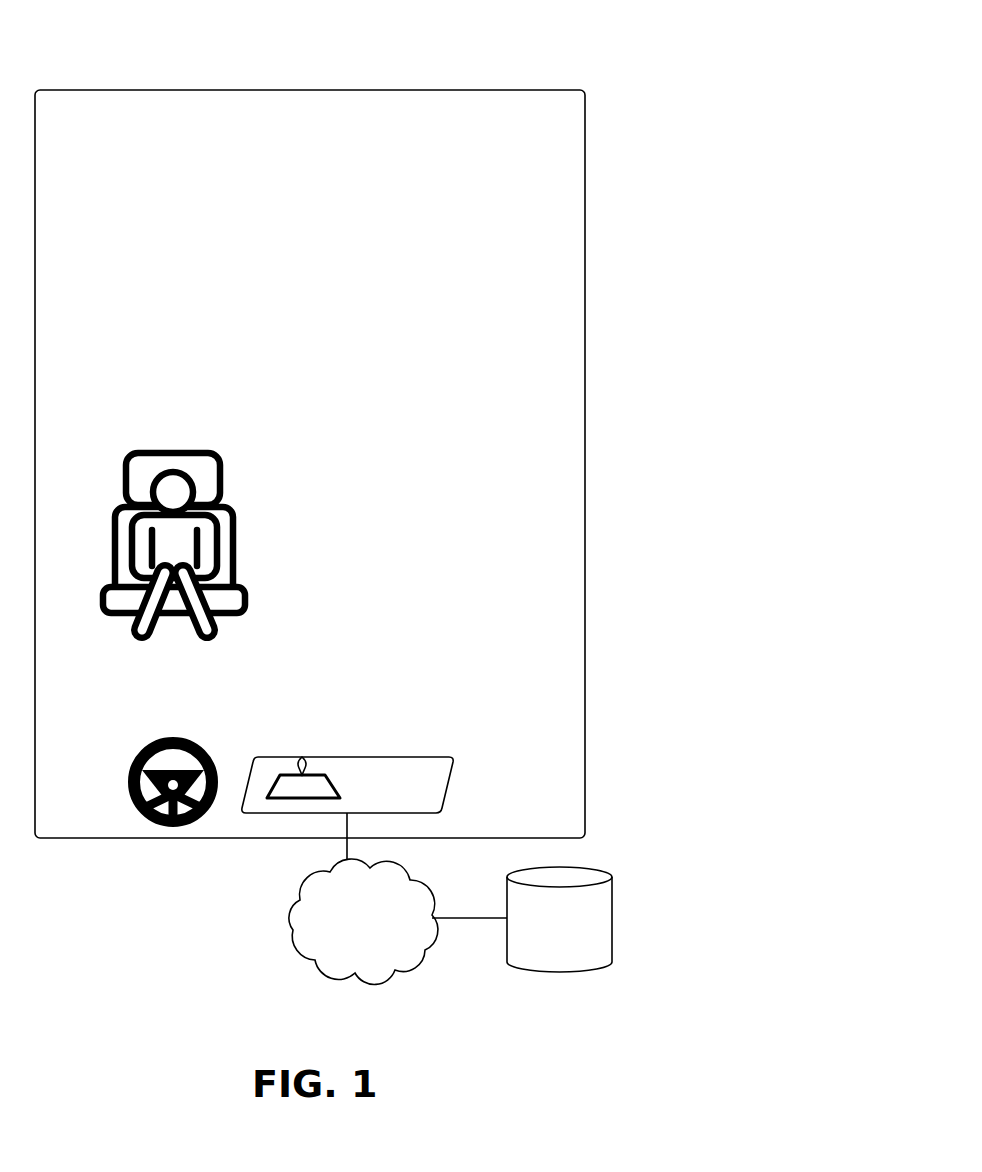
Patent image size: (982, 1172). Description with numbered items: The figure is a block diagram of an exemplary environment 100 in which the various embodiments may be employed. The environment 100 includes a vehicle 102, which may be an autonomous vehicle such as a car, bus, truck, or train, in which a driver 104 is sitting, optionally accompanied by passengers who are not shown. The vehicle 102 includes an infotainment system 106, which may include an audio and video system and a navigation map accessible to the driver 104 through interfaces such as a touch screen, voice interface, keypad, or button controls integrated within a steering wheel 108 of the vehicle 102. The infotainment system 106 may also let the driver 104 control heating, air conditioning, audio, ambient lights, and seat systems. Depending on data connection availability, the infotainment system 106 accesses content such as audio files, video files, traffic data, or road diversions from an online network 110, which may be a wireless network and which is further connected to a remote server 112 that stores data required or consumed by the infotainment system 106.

The environment 100 is at (514, 45).
The vehicle 102 is at (586, 282).
The driver 104 is at (117, 533).
The infotainment system 106 is at (445, 781).
The steering wheel 108 is at (205, 750).
The online network 110 is at (398, 921).
The remote server 112 is at (559, 919).